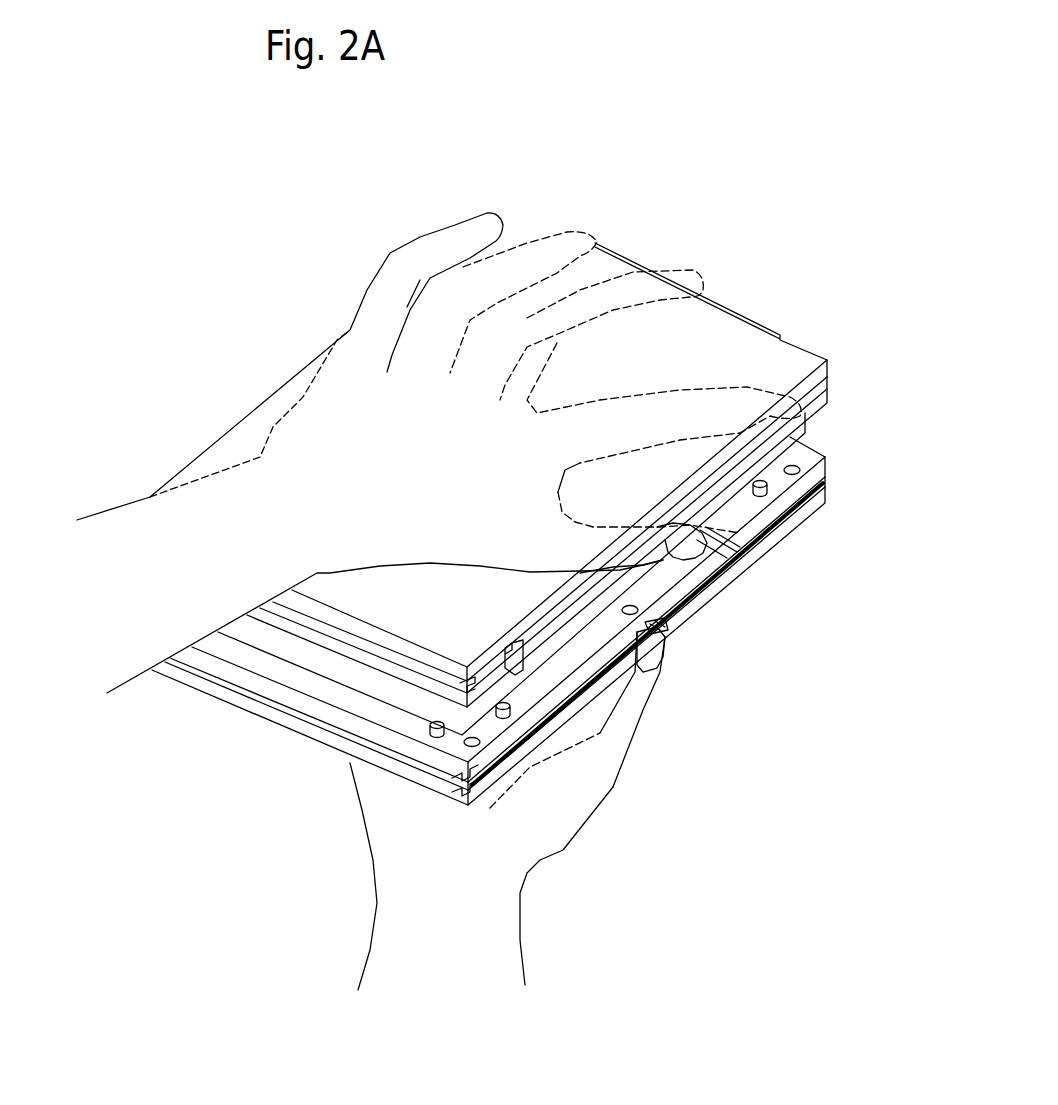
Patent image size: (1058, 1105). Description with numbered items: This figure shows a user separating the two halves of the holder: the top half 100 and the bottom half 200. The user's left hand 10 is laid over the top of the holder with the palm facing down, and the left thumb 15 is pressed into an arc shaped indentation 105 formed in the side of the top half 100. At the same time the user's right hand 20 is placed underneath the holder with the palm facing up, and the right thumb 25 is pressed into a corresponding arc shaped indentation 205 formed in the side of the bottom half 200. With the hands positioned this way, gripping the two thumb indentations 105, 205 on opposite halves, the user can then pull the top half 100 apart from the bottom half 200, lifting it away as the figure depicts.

The first hand 10 is at (330, 480).
The thumb 15 is at (690, 548).
The second hand 20 is at (540, 855).
The finger 25 is at (665, 655).
The top half 100 is at (720, 358).
The arc shaped indentation 105 is at (753, 553).
The bottom half 200 is at (813, 503).
The arc shaped indentation 205 is at (672, 630).